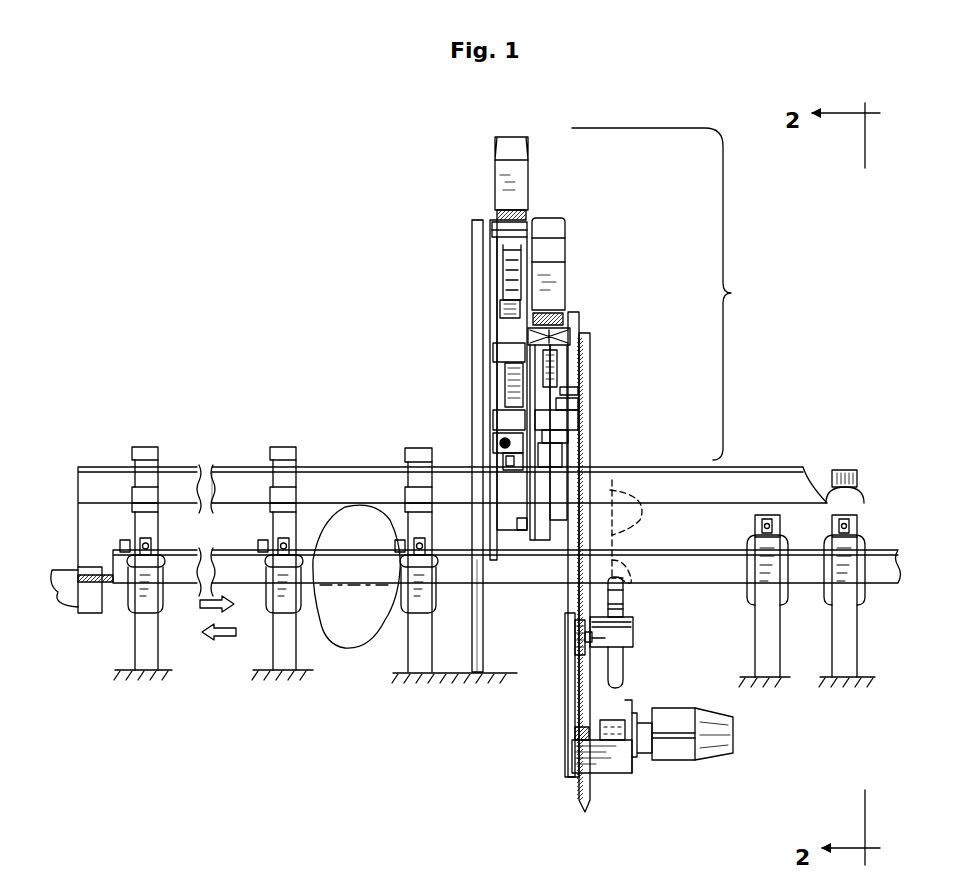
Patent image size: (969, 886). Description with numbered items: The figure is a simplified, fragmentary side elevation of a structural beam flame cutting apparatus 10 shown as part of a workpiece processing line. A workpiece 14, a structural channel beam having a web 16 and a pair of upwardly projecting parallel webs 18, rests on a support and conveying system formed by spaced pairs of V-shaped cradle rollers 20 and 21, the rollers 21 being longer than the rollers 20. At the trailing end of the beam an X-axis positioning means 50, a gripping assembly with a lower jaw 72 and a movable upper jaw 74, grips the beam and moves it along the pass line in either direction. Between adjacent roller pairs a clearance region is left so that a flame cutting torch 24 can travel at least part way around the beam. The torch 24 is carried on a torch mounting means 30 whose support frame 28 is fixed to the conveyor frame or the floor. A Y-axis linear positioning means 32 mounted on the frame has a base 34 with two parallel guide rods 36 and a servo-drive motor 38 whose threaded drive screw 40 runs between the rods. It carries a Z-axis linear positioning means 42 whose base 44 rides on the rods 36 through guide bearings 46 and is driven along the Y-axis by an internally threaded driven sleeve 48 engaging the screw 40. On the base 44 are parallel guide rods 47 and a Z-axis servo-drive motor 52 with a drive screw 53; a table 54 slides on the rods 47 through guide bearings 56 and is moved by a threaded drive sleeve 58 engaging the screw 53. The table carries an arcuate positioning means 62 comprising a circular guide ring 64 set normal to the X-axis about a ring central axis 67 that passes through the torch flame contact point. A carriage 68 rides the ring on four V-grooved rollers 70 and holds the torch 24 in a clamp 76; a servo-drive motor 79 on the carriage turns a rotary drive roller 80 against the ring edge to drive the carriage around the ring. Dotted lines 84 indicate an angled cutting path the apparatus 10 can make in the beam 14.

The apparatus 10 is at (406, 240).
The workpiece 14 is at (118, 462).
The web 16 is at (183, 508).
The webs 18 is at (240, 485).
The rollers 20 is at (862, 590).
The rollers 21 is at (863, 498).
The flame cutting torch 24 is at (625, 595).
The support frame 28 is at (487, 615).
The torch mounting means 30 is at (668, 294).
The Y-axis linear positioning means 32 is at (487, 210).
The base 34 is at (482, 240).
The guide rods 36 is at (500, 400).
The servo-drive motor 38 is at (503, 143).
The drive screw 40 is at (497, 315).
The Z-axis linear positioning means 42 is at (572, 300).
The base 44 is at (528, 540).
The guide bearings 46 is at (497, 345).
The guide rods 47 is at (601, 398).
The driven sleeve 48 is at (495, 460).
The X-axis positioning means 50 is at (75, 612).
The servo-drive motor 52 is at (553, 216).
The drive screw 53 is at (555, 365).
The table 54 is at (560, 434).
The guide bearings 56 is at (576, 393).
The drive sleeve 58 is at (567, 412).
The arcuate positioning means 62 is at (598, 392).
The circular guide ring 64 is at (587, 333).
The ring central axis 67 is at (337, 588).
The carriage 68 is at (567, 757).
The rollers 70 is at (577, 640).
The lower jaw 72 is at (98, 608).
The upper jaw 74 is at (90, 568).
The clamp 76 is at (633, 643).
The servo-drive motor 79 is at (717, 745).
The rotary drive roller 80 is at (576, 733).
The dotted lines 84 is at (622, 573).